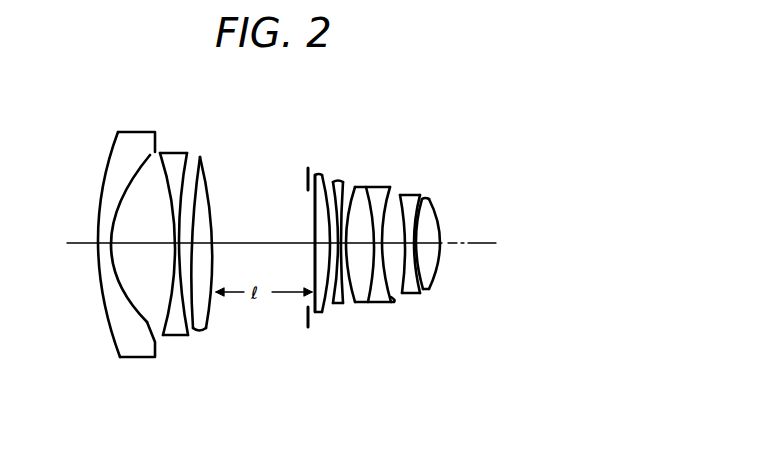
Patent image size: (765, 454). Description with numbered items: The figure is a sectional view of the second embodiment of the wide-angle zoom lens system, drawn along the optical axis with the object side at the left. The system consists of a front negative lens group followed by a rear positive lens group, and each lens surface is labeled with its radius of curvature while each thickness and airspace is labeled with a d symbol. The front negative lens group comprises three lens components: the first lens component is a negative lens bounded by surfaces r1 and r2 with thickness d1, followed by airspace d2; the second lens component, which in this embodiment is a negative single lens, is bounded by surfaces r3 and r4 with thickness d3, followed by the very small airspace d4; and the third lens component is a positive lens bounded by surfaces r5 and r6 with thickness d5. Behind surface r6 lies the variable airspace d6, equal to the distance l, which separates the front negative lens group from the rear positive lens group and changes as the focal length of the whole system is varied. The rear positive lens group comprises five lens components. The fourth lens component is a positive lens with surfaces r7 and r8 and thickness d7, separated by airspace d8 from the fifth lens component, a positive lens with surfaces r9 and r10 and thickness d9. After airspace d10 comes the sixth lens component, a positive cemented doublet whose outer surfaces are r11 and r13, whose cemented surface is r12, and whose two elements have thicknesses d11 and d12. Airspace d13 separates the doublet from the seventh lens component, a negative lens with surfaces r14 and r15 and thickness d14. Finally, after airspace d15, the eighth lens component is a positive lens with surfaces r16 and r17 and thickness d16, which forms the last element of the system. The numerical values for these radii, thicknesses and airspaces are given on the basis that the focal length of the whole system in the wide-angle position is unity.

The thickness of first lens d1 is at (97, 238).
The airspace between first and second lens components d2 is at (125, 240).
The thickness of second lens d3 is at (167, 240).
The airspace between second and third lens components d4 is at (175, 240).
The thickness of third lens d5 is at (193, 238).
The variable airspace between front and rear lens groups d6 is at (222, 240).
The thickness of fourth lens d7 is at (312, 240).
The airspace between fourth and fifth lens components d8 is at (320, 240).
The thickness of fifth lens d9 is at (330, 240).
The airspace between fifth and sixth lens components d10 is at (336, 240).
The thickness of first element of sixth lens component d11 is at (356, 240).
The thickness of second element of sixth lens component d12 is at (377, 240).
The airspace between sixth and seventh lens components d13 is at (392, 240).
The thickness of seventh lens d14 is at (412, 240).
The airspace between seventh and eighth lens components d15 is at (424, 240).
The thickness of eighth lens d16 is at (434, 240).
The radius of curvature of first lens surface r1 is at (113, 340).
The radius of curvature of second lens surface r2 is at (147, 323).
The radius of curvature of third lens surface r3 is at (158, 330).
The radius of curvature of fourth lens surface r4 is at (187, 337).
The radius of curvature of fifth lens surface r5 is at (192, 337).
The radius of curvature of sixth lens surface r6 is at (207, 318).
The radius of curvature of seventh lens surface r7 is at (317, 322).
The radius of curvature of eighth lens surface r8 is at (322, 325).
The radius of curvature of ninth lens surface r9 is at (333, 318).
The radius of curvature of tenth lens surface r10 is at (343, 312).
The radius of curvature of eleventh lens surface r11 is at (349, 304).
The radius of curvature of twelfth lens surface r12 is at (373, 302).
The radius of curvature of thirteenth lens surface r13 is at (393, 302).
The radius of curvature of fourteenth lens surface r14 is at (403, 293).
The radius of curvature of fifteenth lens surface r15 is at (425, 290).
The radius of curvature of sixteenth lens surface r16 is at (420, 274).
The radius of curvature of seventeenth lens surface r17 is at (438, 268).